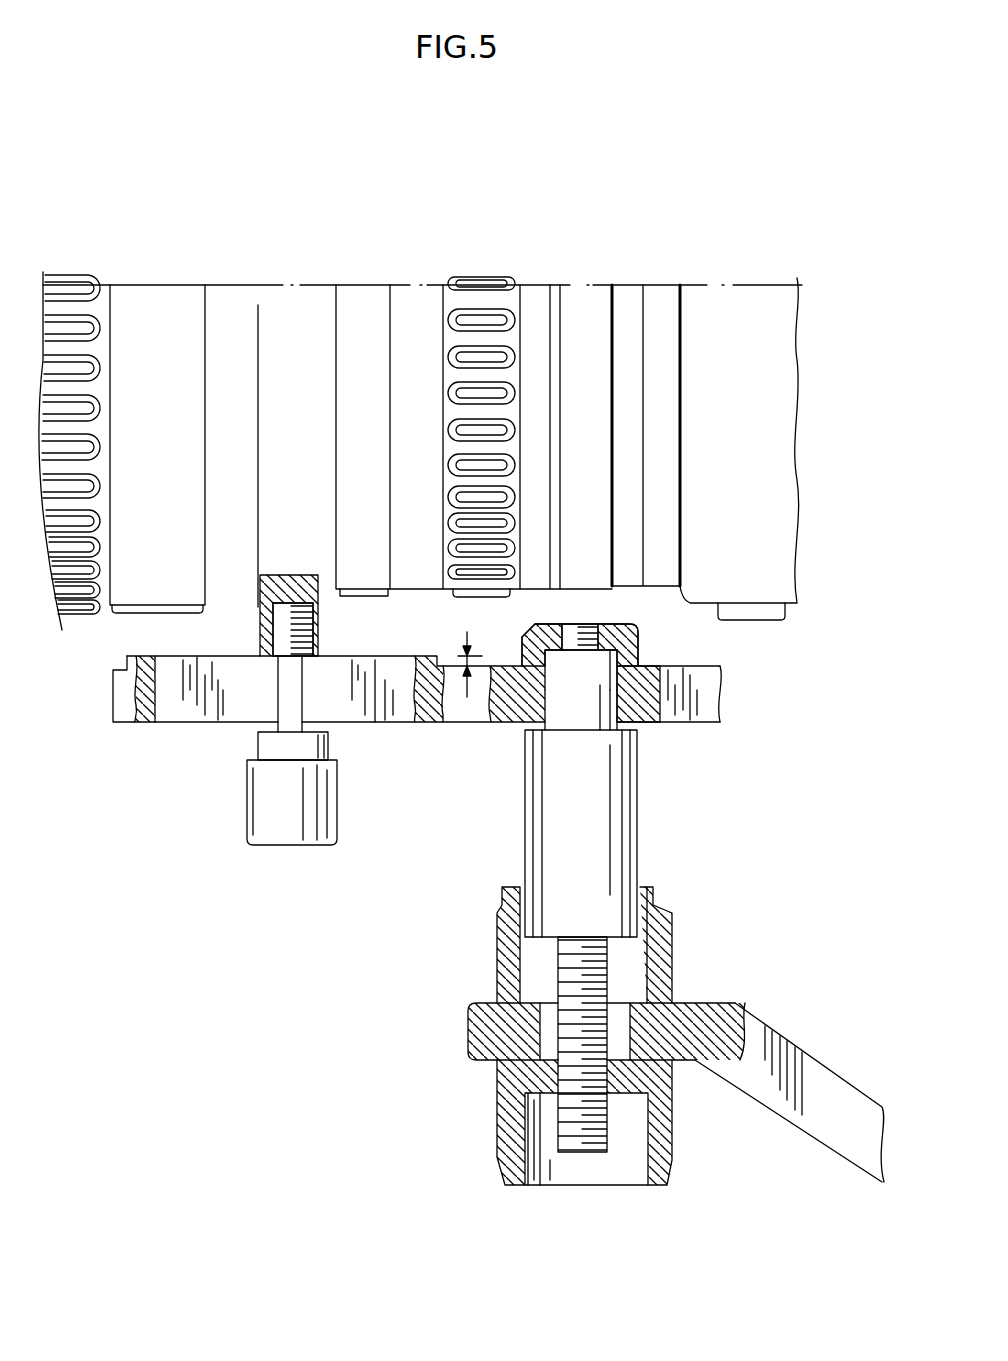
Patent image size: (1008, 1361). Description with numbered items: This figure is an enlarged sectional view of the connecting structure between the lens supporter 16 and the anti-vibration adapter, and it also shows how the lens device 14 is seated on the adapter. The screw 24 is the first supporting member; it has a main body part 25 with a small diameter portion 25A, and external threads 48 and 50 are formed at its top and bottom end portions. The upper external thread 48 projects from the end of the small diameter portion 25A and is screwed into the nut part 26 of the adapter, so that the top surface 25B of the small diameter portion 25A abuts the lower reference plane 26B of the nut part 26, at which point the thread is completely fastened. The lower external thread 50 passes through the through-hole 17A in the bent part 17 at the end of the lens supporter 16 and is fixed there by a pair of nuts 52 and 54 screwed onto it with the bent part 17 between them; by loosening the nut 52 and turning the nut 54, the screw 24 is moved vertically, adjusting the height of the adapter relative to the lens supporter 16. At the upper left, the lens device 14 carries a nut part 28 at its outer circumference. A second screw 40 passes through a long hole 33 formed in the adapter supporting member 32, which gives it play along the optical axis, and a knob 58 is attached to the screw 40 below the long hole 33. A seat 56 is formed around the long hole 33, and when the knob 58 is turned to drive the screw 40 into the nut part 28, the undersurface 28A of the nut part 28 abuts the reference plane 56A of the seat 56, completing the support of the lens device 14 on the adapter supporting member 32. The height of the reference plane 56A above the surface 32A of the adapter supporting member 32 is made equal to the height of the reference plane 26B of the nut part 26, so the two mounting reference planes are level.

The lens device 14 is at (273, 269).
The lens supporter 16 is at (795, 1045).
The bent part 17 is at (700, 1045).
The through-hole 17A is at (622, 1040).
The screw 24 is at (634, 855).
The main body part 25 is at (537, 817).
The small diameter portion 25A is at (582, 712).
The top surface 25B is at (606, 676).
The nut part 26 is at (538, 636).
The lower reference plane 26B is at (640, 685).
The nut part 28 is at (260, 612).
The undersurface 28A is at (320, 656).
The adapter supporting member 32 is at (713, 703).
The surface 32A is at (453, 668).
The long hole 33 is at (160, 708).
The screw 40 is at (316, 630).
The external thread 48 is at (576, 632).
The external thread 50 is at (607, 1125).
The nut 52 is at (678, 975).
The nut 54 is at (493, 1100).
The seat 56 is at (118, 660).
The reference plane 56A is at (263, 648).
The knob 58 is at (340, 800).